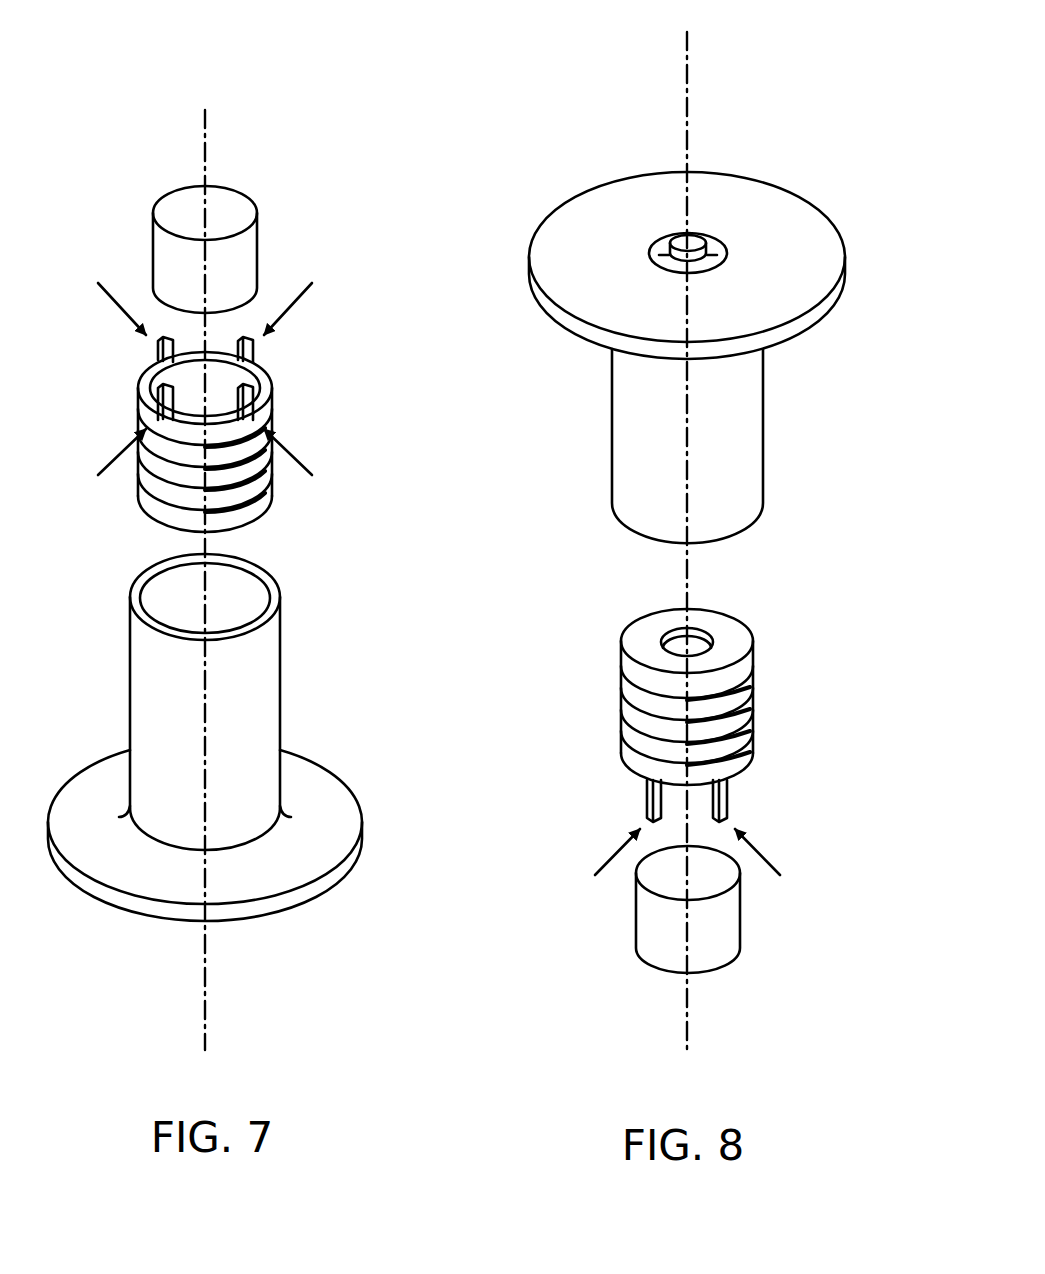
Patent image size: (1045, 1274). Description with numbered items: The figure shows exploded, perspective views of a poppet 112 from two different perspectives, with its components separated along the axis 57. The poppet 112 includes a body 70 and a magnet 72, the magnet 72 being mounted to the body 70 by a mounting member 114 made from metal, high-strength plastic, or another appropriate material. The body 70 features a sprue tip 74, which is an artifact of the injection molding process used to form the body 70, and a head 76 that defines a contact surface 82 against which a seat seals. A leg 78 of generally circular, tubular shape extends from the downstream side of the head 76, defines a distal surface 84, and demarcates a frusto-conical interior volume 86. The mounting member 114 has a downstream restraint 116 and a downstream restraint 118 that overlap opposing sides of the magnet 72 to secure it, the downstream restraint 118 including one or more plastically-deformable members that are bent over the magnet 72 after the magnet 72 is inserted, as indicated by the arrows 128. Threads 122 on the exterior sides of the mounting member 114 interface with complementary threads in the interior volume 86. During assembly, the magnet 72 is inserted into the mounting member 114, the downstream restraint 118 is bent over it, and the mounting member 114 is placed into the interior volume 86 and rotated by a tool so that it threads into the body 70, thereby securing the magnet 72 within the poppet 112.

In FIG. 7, the axis 57 is at (205, 143).
In FIG. 8, the axis 57 is at (687, 78).
In FIG. 7, the body 70 is at (312, 777).
In FIG. 8, the body 70 is at (606, 206).
In FIG. 7, the magnet 72 is at (258, 240).
In FIG. 8, the magnet 72 is at (742, 910).
In FIG. 8, the sprue tip 74 is at (700, 238).
In FIG. 7, the head 76 is at (367, 833).
In FIG. 8, the head 76 is at (724, 257).
In FIG. 7, the leg 78 is at (229, 690).
In FIG. 8, the leg 78 is at (765, 428).
In FIG. 8, the contact surface 82 is at (778, 217).
In FIG. 7, the distal surface 84 is at (276, 592).
In FIG. 7, the interior volume 86 is at (170, 600).
In FIG. 7, the poppet 112 is at (120, 928).
In FIG. 8, the poppet 112 is at (520, 132).
In FIG. 7, the mounting member 114 is at (287, 200).
In FIG. 8, the mounting member 114 is at (623, 912).
In FIG. 8, the downstream restraint 116 is at (646, 636).
In FIG. 7, the downstream restraint 118 is at (158, 390).
In FIG. 8, the downstream restraint 118 is at (645, 798).
In FIG. 7, the threads 122 is at (273, 472).
In FIG. 8, the threads 122 is at (698, 706).
In FIG. 7, the arrows 128 is at (115, 302).
In FIG. 8, the arrows 128 is at (613, 857).